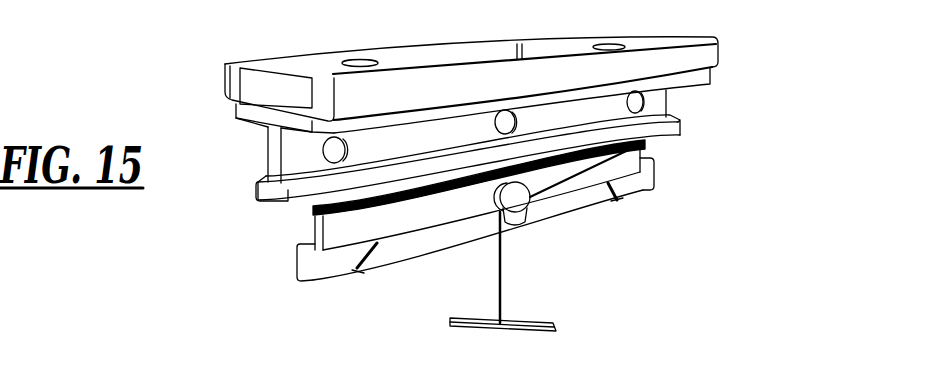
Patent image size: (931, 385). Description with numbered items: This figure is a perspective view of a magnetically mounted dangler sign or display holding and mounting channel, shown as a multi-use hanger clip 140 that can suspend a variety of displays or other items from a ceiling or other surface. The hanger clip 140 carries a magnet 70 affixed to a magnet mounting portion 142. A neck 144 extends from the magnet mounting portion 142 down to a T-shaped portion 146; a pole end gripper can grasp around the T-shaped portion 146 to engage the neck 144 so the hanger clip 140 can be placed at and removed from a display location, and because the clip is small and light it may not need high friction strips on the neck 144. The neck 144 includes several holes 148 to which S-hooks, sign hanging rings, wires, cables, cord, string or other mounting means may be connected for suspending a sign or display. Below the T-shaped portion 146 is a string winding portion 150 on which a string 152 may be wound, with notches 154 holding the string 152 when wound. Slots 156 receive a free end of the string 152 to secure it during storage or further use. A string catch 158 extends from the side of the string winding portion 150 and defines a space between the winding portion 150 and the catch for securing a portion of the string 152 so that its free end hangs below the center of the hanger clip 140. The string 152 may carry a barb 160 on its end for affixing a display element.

The magnet 70 is at (690, 52).
The hanger clip 140 is at (682, 132).
The magnet mounting portion 142 is at (712, 82).
The neck 144 is at (268, 148).
The T-shaped portion 146 is at (275, 200).
The holes 148 is at (350, 137).
The string winding portion 150 is at (585, 207).
The string 152 is at (498, 268).
The notches 154 is at (297, 262).
The slots 156 is at (360, 268).
The string catch 158 is at (522, 213).
The barb 160 is at (465, 322).